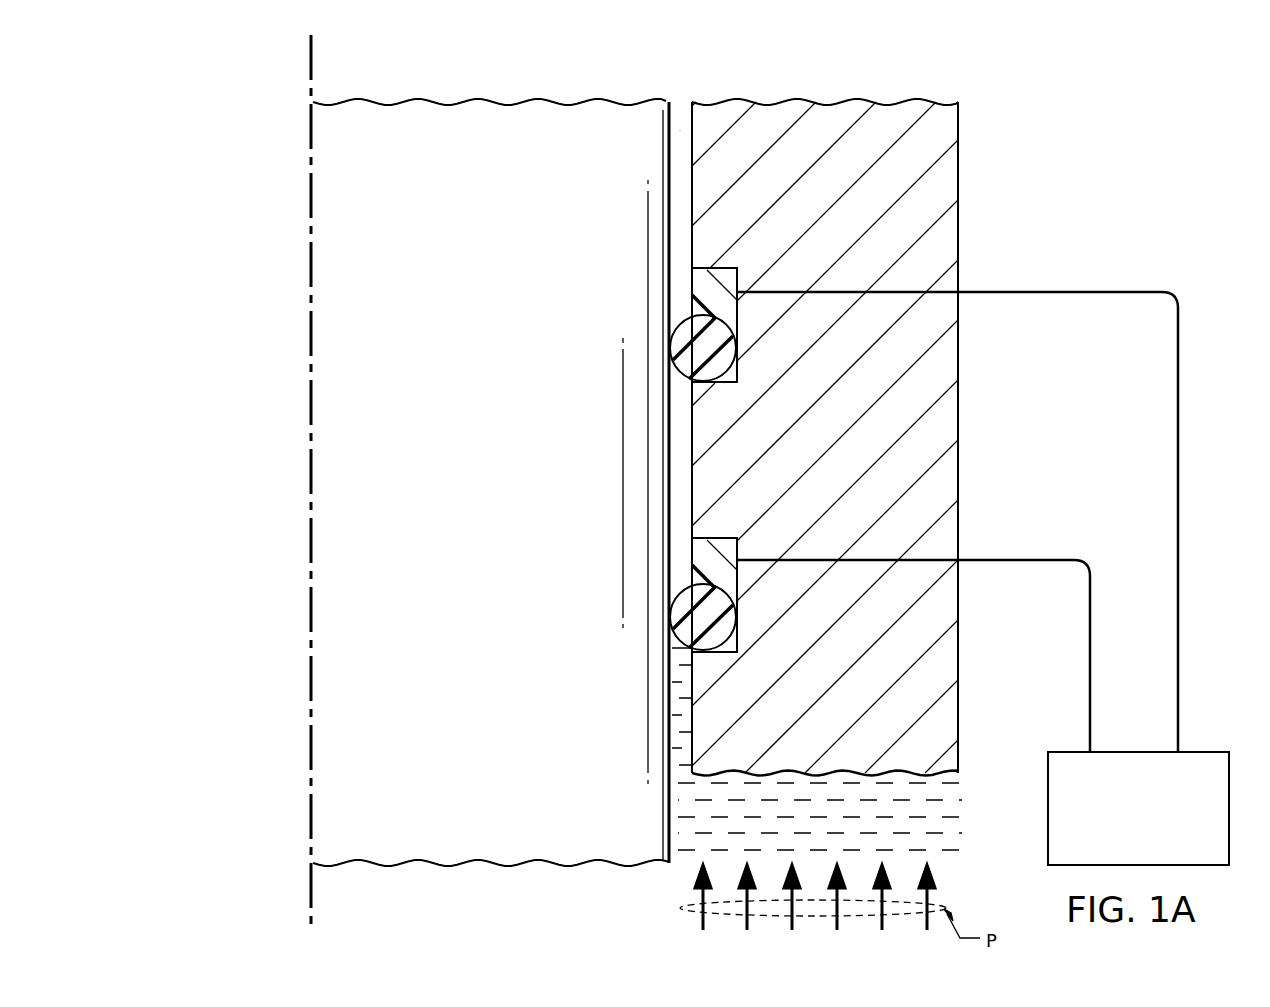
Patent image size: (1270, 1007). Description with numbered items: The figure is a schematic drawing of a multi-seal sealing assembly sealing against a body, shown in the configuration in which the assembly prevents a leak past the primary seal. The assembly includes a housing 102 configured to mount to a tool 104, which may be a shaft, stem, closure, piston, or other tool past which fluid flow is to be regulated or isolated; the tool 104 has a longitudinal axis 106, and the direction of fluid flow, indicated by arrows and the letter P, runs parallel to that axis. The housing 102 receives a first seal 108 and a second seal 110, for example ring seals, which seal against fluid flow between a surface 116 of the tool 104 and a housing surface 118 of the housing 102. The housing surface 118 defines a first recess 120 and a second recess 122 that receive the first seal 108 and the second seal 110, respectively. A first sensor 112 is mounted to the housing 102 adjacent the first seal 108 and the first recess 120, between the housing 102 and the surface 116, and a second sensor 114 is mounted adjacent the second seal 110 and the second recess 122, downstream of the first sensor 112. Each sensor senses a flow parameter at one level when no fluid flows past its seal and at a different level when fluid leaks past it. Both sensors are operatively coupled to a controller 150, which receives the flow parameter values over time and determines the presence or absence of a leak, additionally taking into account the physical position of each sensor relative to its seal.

The housing 102 is at (900, 101).
The tool 104 is at (440, 103).
The longitudinal axis 106 is at (310, 57).
The first seal 108 is at (722, 630).
The second seal 110 is at (722, 363).
The first sensor 112 is at (725, 548).
The second sensor 114 is at (724, 277).
The surface 116 is at (669, 100).
The housing surface 118 is at (680, 126).
The first recess 120 is at (732, 588).
The second recess 122 is at (728, 322).
The controller 150 is at (1161, 823).